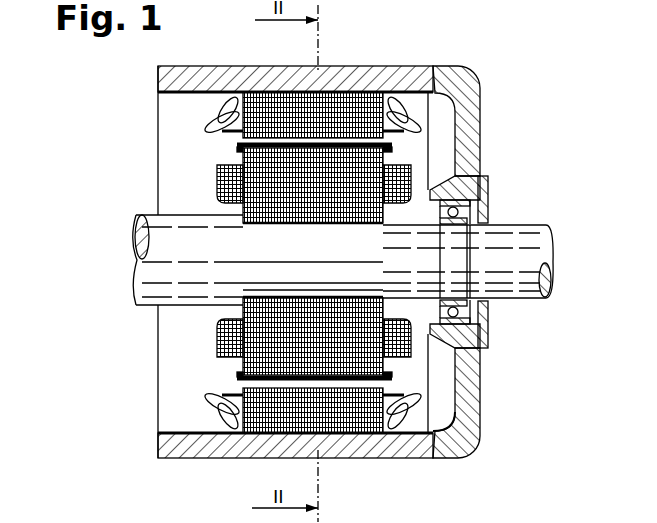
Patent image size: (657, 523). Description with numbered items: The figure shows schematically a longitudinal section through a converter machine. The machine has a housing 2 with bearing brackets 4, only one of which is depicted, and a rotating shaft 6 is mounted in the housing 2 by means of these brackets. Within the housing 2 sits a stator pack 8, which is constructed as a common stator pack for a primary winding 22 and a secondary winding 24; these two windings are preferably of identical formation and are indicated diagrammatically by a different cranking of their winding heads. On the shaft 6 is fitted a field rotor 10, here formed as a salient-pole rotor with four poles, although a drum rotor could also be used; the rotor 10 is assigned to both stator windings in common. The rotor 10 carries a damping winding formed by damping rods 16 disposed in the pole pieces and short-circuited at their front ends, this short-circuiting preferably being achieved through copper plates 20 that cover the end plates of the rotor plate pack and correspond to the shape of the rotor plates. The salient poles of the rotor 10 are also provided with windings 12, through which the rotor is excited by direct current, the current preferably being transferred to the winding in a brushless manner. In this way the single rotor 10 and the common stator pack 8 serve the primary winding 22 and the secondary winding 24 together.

The housing 2 is at (378, 66).
The bearing bracket 4 is at (470, 138).
The shaft 6 is at (530, 250).
The stator pack 8 is at (267, 92).
The field rotor 10 is at (243, 163).
The windings 12 is at (218, 190).
The damping rods 16 is at (243, 374).
The copper plates 20 is at (243, 376).
The primary winding 22 is at (420, 405).
The secondary winding 24 is at (433, 422).